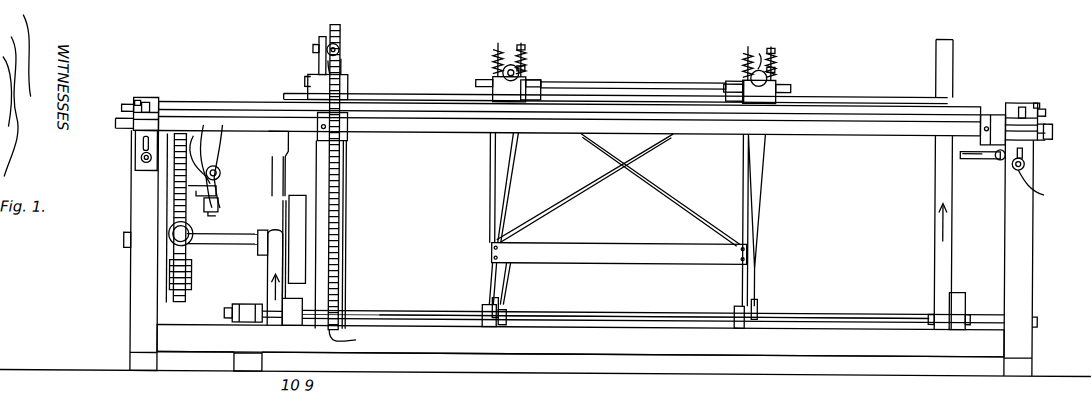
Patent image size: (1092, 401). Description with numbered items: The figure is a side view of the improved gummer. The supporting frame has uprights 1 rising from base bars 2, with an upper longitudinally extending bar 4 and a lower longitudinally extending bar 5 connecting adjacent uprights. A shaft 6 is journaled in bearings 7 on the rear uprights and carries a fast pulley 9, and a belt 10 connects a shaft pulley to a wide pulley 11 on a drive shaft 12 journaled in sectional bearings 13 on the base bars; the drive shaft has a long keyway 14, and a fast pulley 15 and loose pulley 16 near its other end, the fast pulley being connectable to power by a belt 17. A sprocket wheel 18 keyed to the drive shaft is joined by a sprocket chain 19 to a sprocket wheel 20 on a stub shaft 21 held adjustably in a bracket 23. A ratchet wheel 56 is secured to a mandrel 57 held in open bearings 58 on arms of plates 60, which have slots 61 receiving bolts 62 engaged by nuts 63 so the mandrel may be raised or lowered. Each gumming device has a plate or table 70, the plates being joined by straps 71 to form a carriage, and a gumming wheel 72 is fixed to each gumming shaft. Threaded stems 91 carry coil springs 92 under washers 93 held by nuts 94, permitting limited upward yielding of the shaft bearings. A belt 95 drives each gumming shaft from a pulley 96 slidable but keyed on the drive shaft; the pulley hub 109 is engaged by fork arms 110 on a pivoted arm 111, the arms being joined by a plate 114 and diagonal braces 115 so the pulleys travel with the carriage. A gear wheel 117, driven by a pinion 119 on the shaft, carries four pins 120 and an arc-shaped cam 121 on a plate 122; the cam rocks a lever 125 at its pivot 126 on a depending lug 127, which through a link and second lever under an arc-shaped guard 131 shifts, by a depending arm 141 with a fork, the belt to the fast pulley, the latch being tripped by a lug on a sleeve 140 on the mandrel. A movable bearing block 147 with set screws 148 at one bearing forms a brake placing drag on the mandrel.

The uprights 1 is at (131, 292).
The base bars 2 is at (146, 373).
The upper longitudinally extending bar 4 is at (452, 118).
The lower longitudinally extending bar 5 is at (580, 340).
The shaft 6 is at (227, 235).
The bearings 7 is at (124, 244).
The fast pulley 9 is at (756, 49).
The belt 10 is at (276, 292).
The wide pulley 11 is at (300, 302).
The drive shaft 12 is at (371, 312).
The sectional bearings 13 is at (242, 306).
The keyway 14 is at (607, 312).
The fast pulley 15 is at (935, 301).
The loose pulley 16 is at (958, 290).
The belt 17 is at (935, 206).
The sprocket wheel 18 is at (352, 340).
The sprocket chain 19 is at (340, 212).
The sprocket wheel 20 is at (334, 30).
The stub shaft 21 is at (340, 50).
The bracket 23 is at (318, 42).
The ratchet wheel 56 is at (346, 162).
The mandrel 57 is at (118, 124).
The open bearings 58 is at (140, 131).
The plates 60 is at (160, 103).
The slots 61 is at (146, 104).
The bolts 62 is at (1042, 188).
The nuts 63 is at (136, 168).
The plate or table 70 is at (490, 92).
The straps 71 is at (627, 82).
The gumming wheel 72 is at (505, 92).
The threaded stems 91 is at (498, 44).
The coil spring 92 is at (494, 64).
The washer 93 is at (524, 62).
The nut 94 is at (524, 52).
The belt 95 is at (508, 190).
The pulley 96 is at (512, 300).
The hub 109 is at (483, 305).
The fork arms 110 is at (492, 327).
The arm 111 is at (742, 178).
The plate 114 is at (643, 250).
The diagonal braces 115 is at (645, 191).
The gear wheel 117 is at (181, 288).
The pinion 119 is at (170, 228).
The pins 120 is at (190, 274).
The arc-shaped cam 121 is at (221, 177).
The plate 122 is at (218, 195).
The lever 125 is at (220, 212).
The pivot 126 is at (222, 168).
The depending lug 127 is at (225, 141).
The arc-shaped guard 131 is at (972, 157).
The sleeve 140 is at (997, 112).
The depending arm 141 is at (293, 163).
The bearing block 147 is at (121, 110).
The set screws 148 is at (134, 104).